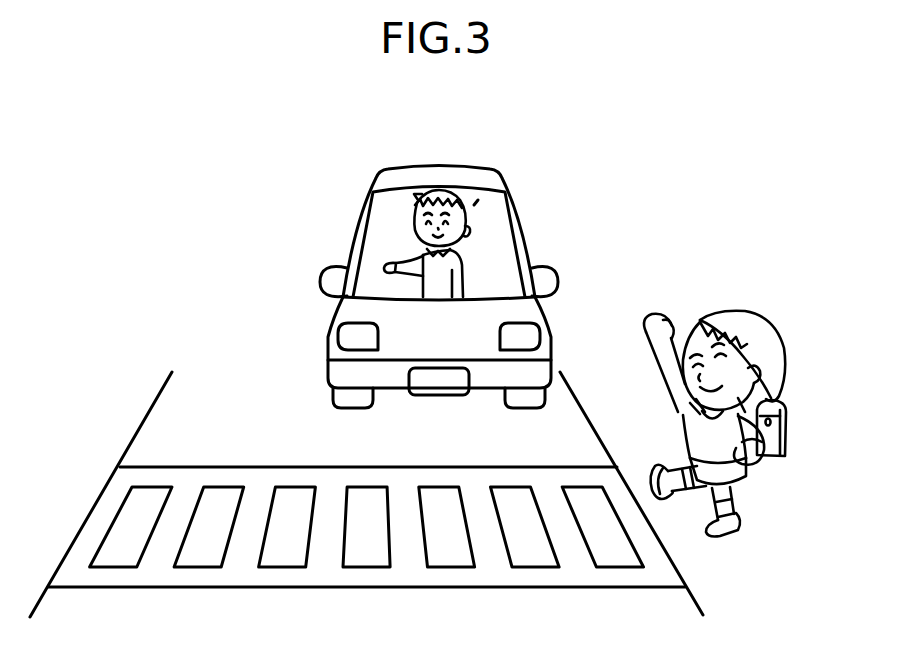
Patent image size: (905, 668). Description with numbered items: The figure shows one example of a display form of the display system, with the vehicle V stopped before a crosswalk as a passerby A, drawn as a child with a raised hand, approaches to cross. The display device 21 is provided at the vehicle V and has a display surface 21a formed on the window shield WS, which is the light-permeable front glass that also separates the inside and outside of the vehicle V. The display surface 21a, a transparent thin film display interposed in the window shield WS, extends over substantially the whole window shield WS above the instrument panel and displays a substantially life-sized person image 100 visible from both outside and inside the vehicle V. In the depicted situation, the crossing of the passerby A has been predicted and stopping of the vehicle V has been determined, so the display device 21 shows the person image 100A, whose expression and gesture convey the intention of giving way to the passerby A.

The person image 100A is at (390, 226).
The person image 100 is at (321, 243).
The display surface 21a is at (487, 205).
The display device 21 is at (533, 163).
The vehicle V is at (544, 205).
The window shield WS is at (500, 244).
The passerby A is at (796, 304).